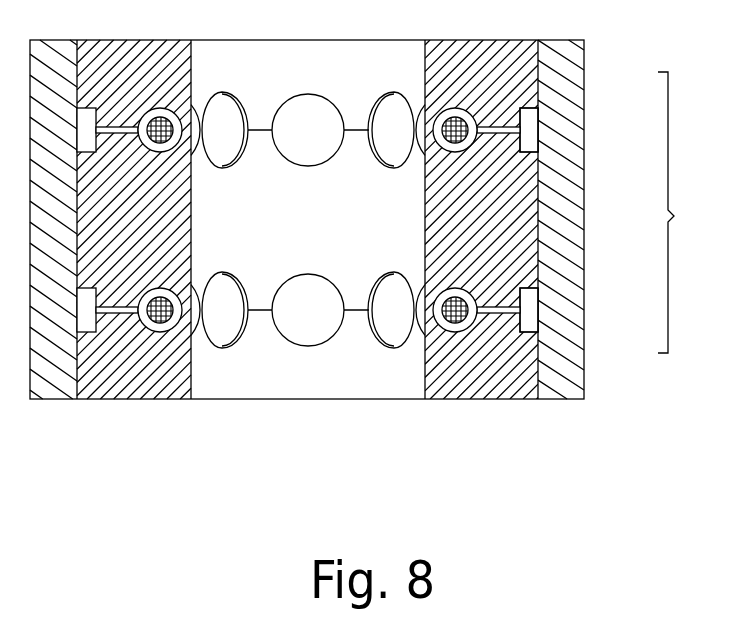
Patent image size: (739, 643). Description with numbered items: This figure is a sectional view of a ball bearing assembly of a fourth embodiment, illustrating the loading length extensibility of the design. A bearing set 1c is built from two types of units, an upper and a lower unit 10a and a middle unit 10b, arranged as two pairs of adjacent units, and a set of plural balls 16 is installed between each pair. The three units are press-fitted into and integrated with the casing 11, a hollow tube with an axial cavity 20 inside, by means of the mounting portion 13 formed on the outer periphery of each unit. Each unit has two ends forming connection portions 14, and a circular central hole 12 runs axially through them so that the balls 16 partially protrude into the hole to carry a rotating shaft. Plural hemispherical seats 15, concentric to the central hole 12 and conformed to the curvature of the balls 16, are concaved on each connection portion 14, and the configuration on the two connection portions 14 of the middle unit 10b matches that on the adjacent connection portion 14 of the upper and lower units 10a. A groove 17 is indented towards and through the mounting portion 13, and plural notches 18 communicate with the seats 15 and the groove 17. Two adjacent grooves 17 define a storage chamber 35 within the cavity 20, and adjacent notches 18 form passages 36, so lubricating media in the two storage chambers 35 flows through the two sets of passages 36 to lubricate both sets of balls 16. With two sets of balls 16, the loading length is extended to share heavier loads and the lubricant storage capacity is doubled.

The bearing set 1c is at (682, 212).
The unit 10a is at (510, 72).
The unit 10b is at (515, 177).
The casing 11 is at (563, 378).
The central hole 12 is at (352, 355).
The mounting portion 13 is at (537, 372).
The connection portion 14 is at (262, 318).
The hemispherical seat 15 is at (187, 280).
The ball 16 is at (153, 318).
The groove 17 is at (118, 143).
The notch 18 is at (118, 117).
The cavity 20 is at (77, 358).
The storage chamber 35 is at (528, 137).
The passage 36 is at (497, 125).